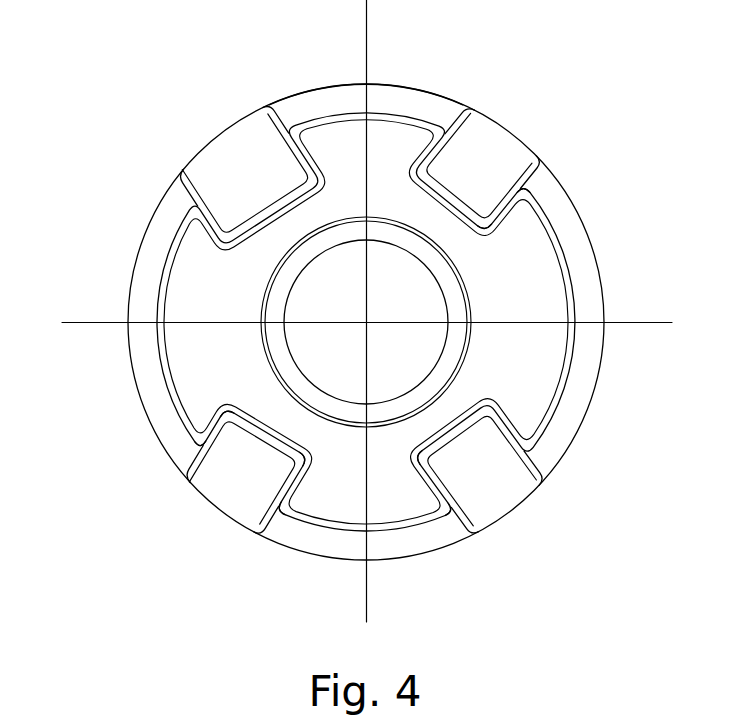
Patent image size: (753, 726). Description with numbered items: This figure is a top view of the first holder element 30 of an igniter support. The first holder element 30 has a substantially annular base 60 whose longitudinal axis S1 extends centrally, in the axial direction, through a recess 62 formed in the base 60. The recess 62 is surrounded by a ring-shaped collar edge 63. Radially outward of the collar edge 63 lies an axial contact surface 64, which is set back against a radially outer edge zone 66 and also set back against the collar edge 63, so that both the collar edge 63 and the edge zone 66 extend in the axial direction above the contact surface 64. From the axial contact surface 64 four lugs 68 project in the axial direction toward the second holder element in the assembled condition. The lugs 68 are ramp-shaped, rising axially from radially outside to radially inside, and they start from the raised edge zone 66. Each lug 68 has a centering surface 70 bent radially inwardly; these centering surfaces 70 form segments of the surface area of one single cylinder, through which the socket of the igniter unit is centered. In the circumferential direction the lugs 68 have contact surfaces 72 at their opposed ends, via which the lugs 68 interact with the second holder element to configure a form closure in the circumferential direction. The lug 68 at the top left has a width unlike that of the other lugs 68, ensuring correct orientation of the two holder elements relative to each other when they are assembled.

The first holder element 30 is at (138, 139).
The annular base 60 is at (527, 390).
The recess 62 is at (344, 388).
The collar edge 63 is at (458, 335).
The axial contact surface 64 is at (201, 285).
The radially outer edge zone 66 is at (415, 107).
The lugs 68 is at (237, 168).
The centering surfaces 70 is at (271, 416).
The contact surfaces 72 is at (532, 196).
The longitudinal axis S1 is at (367, 320).